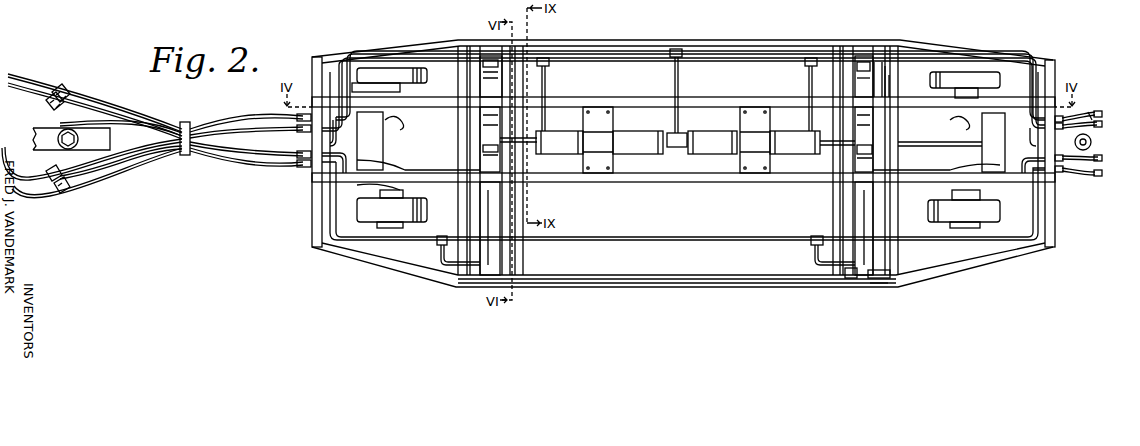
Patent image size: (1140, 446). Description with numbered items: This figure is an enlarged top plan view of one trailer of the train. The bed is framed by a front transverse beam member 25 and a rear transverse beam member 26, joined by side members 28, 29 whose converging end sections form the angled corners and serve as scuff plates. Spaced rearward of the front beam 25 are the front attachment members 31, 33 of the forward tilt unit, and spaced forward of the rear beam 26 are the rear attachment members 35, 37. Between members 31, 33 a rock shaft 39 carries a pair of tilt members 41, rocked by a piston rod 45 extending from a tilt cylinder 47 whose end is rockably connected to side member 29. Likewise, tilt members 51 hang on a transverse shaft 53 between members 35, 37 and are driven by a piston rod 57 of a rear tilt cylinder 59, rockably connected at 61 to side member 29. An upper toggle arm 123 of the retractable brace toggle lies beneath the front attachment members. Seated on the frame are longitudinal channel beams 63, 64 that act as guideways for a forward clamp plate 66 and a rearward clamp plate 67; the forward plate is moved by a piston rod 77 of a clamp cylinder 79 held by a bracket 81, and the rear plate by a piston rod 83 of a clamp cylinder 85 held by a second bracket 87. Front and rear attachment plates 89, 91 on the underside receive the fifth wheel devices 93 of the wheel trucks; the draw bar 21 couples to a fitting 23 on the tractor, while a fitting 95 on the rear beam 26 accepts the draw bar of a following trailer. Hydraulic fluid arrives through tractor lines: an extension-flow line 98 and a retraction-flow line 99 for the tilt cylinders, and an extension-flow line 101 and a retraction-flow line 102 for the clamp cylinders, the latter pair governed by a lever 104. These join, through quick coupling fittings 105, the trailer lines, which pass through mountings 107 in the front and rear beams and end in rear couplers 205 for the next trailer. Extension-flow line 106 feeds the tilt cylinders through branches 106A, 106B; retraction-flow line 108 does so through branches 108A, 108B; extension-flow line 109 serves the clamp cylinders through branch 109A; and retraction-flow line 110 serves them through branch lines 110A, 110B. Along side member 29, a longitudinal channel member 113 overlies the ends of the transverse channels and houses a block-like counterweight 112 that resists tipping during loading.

The draw bar 21 is at (148, 128).
The fitting 23 is at (63, 88).
The front transverse beam member 25 is at (312, 80).
The rear transverse beam member 26 is at (1052, 82).
The side member 28 is at (740, 48).
The side member 29 is at (876, 287).
The transverse intermediate beam member 31 is at (462, 52).
The second attachment member 33 is at (523, 50).
The rear attachment member 35 is at (838, 52).
The rear attachment member 37 is at (893, 55).
The rock shaft 39 is at (487, 58).
The tilt members 41 is at (472, 82).
The piston rod 45 is at (483, 158).
The tilt cylinder 47 is at (490, 228).
The tilt members 51 is at (886, 92).
The transverse shaft 53 is at (862, 62).
The piston rod 57 is at (874, 157).
The tilt cylinder 59 is at (864, 228).
The rockable connection 61 is at (858, 287).
The longitudinal beam member 63 is at (620, 100).
The longitudinal beam member 64 is at (698, 182).
The forward clamp plate 66 is at (383, 122).
The rearward clamp plate 67 is at (993, 142).
The piston rod 77 is at (410, 142).
The clamp cylinder 79 is at (559, 142).
The bracket 81 is at (583, 113).
The piston rod 83 is at (950, 144).
The clamp cylinder 85 is at (730, 134).
The bracket 87 is at (745, 107).
The front attachment plate 89 is at (336, 145).
The rear attachment plate 91 is at (1030, 150).
The fifth wheel device 93 is at (677, 126).
The fitting 95 is at (1092, 143).
The extension-flow line 98 is at (28, 195).
The retraction-flow line 99 is at (14, 176).
The extension-flow line 101 is at (32, 78).
The retraction-flow line 102 is at (35, 94).
The lever 104 is at (70, 94).
The quick coupling fitting 105 is at (68, 186).
The extension-flow line 106 is at (80, 177).
The branch 106A is at (438, 254).
The branch 106B is at (812, 262).
The mounting 107 is at (304, 166).
The retraction-flow line 108 is at (110, 147).
The branch 108A is at (440, 170).
The branch 108B is at (914, 170).
The extension-flow line 109 is at (250, 116).
The branch 109A is at (678, 87).
The retraction-flow line 110 is at (62, 123).
The branch line 110A is at (546, 88).
The branch line 110B is at (810, 84).
The counterweight 112 is at (602, 275).
The longitudinal channel member 113 is at (716, 287).
The upper toggle arm 123 is at (876, 90).
The quick coupling fitting 205 is at (1118, 103).